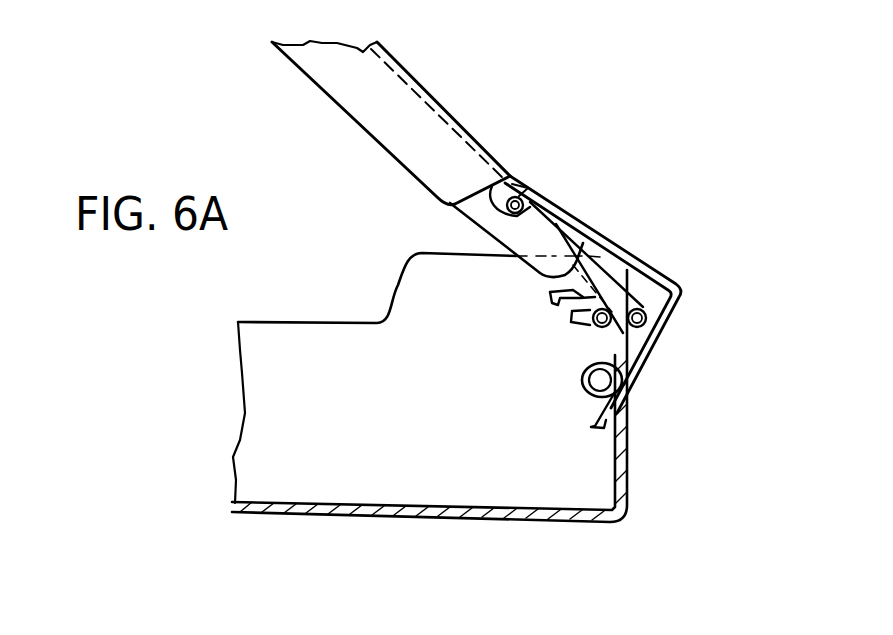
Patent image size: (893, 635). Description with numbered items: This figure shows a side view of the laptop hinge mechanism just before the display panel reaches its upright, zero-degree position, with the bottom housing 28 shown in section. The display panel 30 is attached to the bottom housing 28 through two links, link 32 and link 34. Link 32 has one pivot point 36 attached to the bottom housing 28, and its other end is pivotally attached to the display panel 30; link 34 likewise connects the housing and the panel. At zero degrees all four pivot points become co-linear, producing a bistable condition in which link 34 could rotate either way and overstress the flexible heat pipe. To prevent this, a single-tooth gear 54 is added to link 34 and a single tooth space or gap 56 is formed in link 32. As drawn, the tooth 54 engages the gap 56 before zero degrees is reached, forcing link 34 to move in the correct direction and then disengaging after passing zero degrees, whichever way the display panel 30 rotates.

The bottom housing 28 is at (452, 518).
The display panel 30 is at (463, 118).
The link 32 is at (680, 289).
The link 34 is at (633, 352).
The pivot point 36 is at (628, 410).
The single-tooth gear 54 is at (577, 317).
The tooth space 56 is at (552, 302).